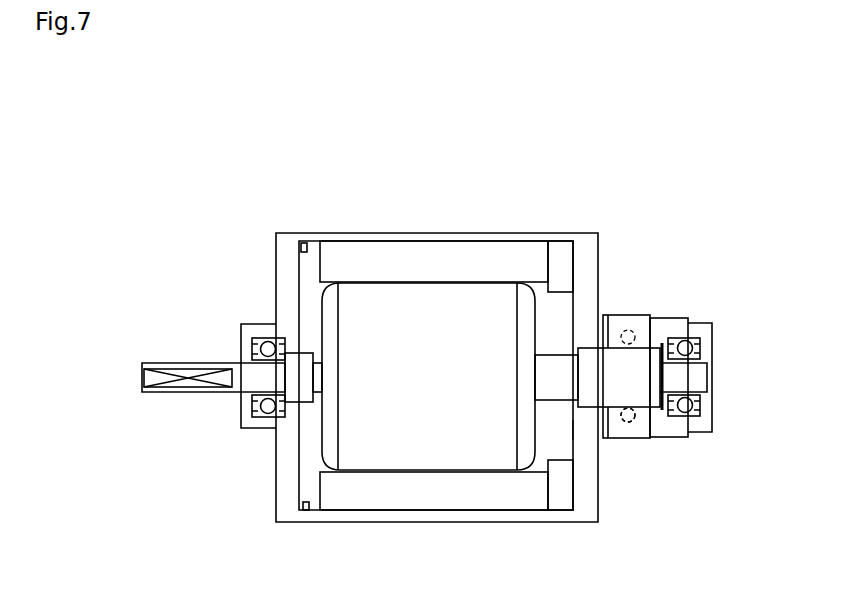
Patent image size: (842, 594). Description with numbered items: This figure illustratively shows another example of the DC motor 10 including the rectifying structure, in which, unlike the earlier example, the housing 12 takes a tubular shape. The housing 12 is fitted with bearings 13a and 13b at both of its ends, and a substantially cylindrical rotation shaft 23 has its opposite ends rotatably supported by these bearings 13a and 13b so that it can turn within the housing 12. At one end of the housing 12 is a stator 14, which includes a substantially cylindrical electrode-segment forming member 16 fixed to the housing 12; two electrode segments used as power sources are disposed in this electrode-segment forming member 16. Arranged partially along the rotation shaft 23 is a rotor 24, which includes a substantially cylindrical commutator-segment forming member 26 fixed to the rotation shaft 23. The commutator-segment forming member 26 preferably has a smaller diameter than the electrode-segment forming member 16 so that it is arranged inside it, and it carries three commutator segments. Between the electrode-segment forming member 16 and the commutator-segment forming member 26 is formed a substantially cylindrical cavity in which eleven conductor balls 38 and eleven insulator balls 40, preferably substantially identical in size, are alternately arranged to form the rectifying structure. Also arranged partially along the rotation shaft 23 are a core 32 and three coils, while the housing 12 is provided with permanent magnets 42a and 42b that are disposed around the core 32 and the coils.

The DC motor 10 is at (266, 139).
The housing 12 is at (352, 232).
The bearing 13a is at (251, 321).
The bearing 13b is at (701, 320).
The stator 14 is at (612, 313).
The electrode-segment forming member 16 is at (648, 318).
The rotation shaft 23 is at (240, 383).
The rotor 24 is at (566, 430).
The commutator-segment forming member 26 is at (612, 388).
The core 32 is at (441, 443).
The conductor ball 38 is at (630, 327).
The insulator ball 40 is at (628, 415).
The permanent magnet 42a is at (425, 240).
The permanent magnet 42b is at (344, 491).